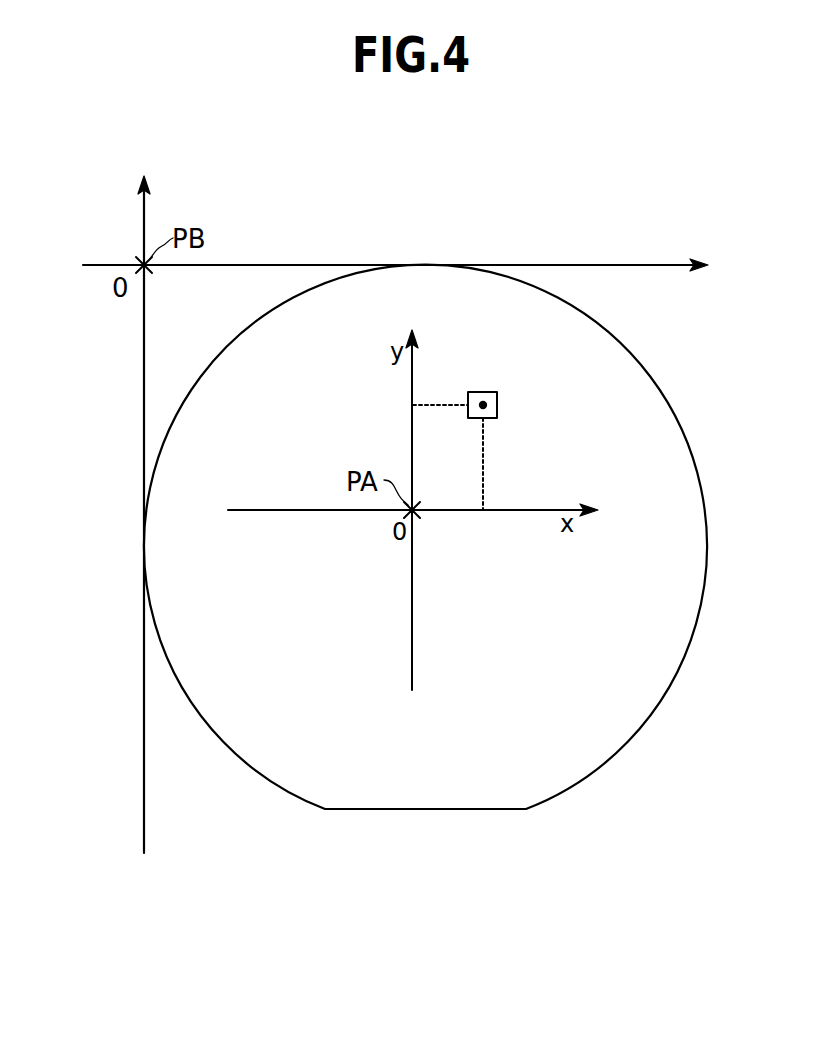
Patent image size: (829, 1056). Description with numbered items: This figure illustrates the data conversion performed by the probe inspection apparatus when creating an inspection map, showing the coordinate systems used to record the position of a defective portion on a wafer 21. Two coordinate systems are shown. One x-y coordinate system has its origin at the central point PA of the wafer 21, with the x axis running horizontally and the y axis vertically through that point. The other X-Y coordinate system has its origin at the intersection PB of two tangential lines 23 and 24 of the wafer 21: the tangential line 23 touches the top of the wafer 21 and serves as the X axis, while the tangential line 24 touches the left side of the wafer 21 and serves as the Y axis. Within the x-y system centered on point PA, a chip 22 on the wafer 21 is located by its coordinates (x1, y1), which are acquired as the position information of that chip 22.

The wafer 21 is at (656, 704).
The chip 22 is at (506, 370).
The tangential line 23 is at (600, 265).
The tangential line 24 is at (144, 688).